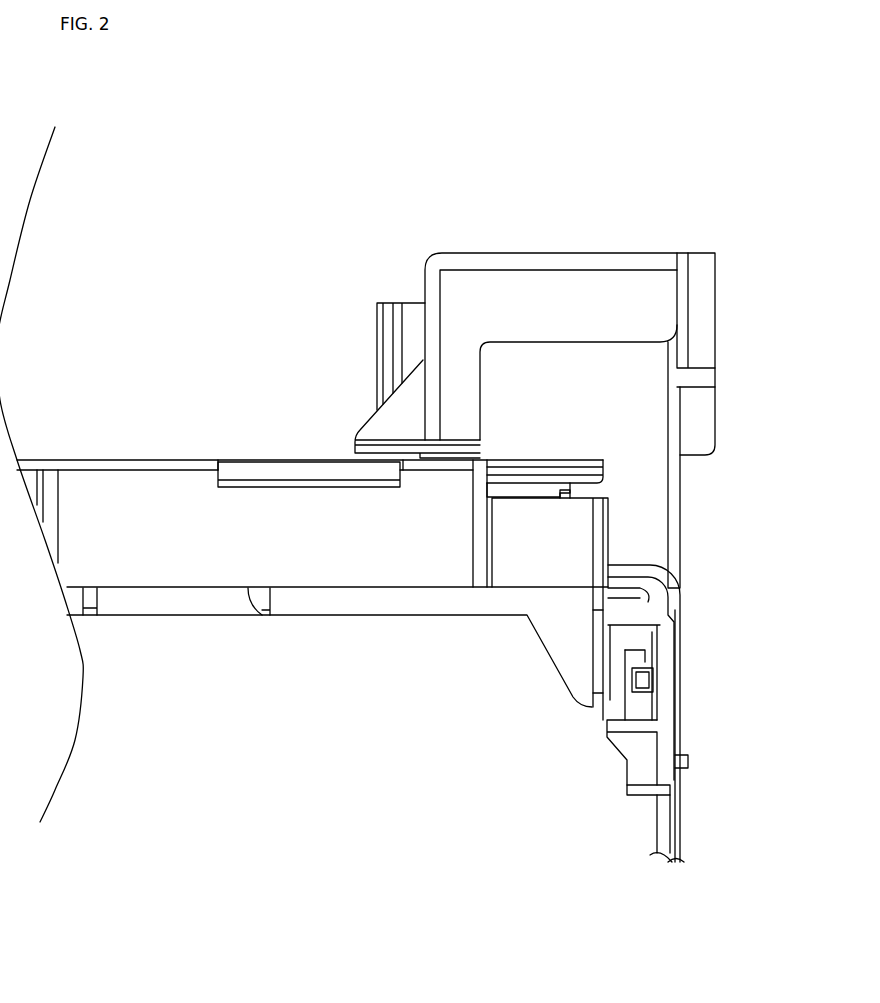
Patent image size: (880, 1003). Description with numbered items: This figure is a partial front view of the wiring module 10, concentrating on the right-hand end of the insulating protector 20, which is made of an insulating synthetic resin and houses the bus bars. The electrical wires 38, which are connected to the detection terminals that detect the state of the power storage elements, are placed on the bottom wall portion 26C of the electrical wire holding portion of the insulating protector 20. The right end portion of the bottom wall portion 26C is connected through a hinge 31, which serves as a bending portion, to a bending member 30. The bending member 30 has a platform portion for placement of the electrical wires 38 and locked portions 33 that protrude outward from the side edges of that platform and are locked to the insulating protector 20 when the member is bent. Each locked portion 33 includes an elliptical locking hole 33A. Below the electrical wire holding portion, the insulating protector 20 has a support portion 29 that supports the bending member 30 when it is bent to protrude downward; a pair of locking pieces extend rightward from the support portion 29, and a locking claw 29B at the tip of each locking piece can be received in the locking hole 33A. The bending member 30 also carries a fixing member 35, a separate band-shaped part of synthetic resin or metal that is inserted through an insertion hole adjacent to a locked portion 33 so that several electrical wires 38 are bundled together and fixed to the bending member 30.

The wiring module 10 is at (594, 180).
The insulating protector 20 is at (715, 300).
The bottom wall portion 26C is at (618, 588).
The support portion 29 is at (577, 707).
The locking claw 29B is at (655, 688).
The bending member 30 is at (551, 644).
The hinge 31 is at (645, 596).
The locked portion 33 is at (697, 663).
The locking hole 33A is at (650, 648).
The fixing member 35 is at (690, 757).
The electrical wire 38 is at (672, 860).